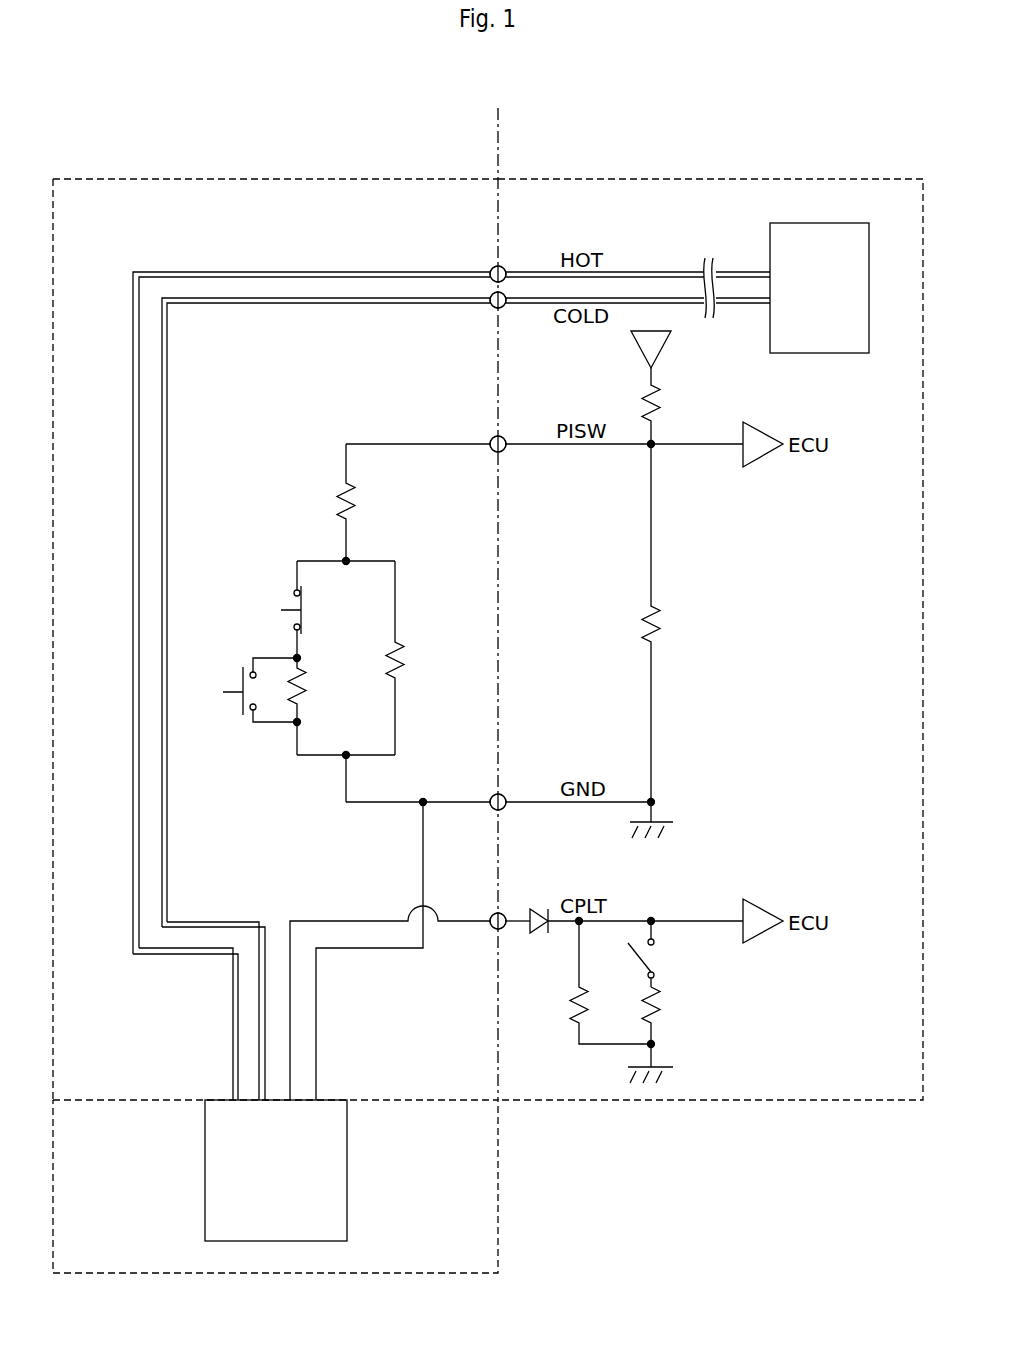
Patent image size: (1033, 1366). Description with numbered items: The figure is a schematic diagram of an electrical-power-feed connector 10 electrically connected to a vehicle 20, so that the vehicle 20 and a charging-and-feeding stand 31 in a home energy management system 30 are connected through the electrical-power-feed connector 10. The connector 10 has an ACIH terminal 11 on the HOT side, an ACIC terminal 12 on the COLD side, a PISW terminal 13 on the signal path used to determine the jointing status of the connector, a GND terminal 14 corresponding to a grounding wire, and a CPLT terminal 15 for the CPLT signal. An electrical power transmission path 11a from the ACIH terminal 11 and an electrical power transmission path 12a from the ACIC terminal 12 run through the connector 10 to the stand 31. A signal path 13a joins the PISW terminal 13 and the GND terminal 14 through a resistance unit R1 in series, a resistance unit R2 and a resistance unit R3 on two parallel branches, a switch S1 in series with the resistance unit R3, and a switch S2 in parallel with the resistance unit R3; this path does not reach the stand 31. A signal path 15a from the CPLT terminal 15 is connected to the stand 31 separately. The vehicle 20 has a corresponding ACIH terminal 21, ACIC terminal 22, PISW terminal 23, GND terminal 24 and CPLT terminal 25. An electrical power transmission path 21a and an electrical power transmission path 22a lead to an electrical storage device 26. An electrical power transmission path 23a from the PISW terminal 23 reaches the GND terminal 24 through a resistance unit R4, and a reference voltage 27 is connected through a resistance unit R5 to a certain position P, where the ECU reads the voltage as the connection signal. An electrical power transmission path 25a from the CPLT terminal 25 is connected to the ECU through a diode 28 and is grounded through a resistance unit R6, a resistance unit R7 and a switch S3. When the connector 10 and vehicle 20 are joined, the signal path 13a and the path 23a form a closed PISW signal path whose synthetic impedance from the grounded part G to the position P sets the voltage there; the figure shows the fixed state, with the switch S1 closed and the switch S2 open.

The electrical-power-feed connector 10 is at (275, 179).
The vehicle 20 is at (712, 179).
The home energy management system (HEMS) 30 is at (278, 1273).
The charging-and-feeding stand 31 is at (347, 1168).
The ACIH terminal (HOT-side terminal) 11 is at (493, 267).
The ACIC terminal (COLD-side terminal) 12 is at (493, 308).
The PISW terminal 13 is at (493, 437).
The GND terminal 14 is at (493, 795).
The CPLT terminal 15 is at (493, 914).
The ACIH terminal 21 is at (503, 267).
The ACIC terminal 22 is at (503, 308).
The PISW terminal 23 is at (503, 437).
The GND terminal 24 is at (503, 795).
The CPLT terminal 25 is at (503, 914).
The electrical power transmission path 11a is at (275, 272).
The electrical power transmission path 12a is at (275, 305).
The signal path 13a is at (410, 444).
The signal path 15a is at (347, 921).
The electrical power transmission path 21a is at (744, 272).
The electrical power transmission path 22a is at (745, 305).
The electrical power transmission path 23a is at (575, 446).
The electrical power transmission path 25a is at (694, 921).
The electrical storage device 26 is at (820, 355).
The reference voltage 27 is at (666, 343).
The diode 28 is at (541, 935).
The resistance unit R1 is at (364, 502).
The resistance unit R2 is at (412, 658).
The resistance unit R3 is at (313, 706).
The resistance unit R4 is at (668, 623).
The resistance unit R5 is at (668, 406).
The resistance unit R6 is at (610, 982).
The resistance unit R7 is at (668, 1027).
The switch S1 is at (276, 609).
The switch S2 is at (244, 690).
The switch S3 is at (661, 954).
The certain position P is at (651, 446).
The grounded part G is at (663, 822).